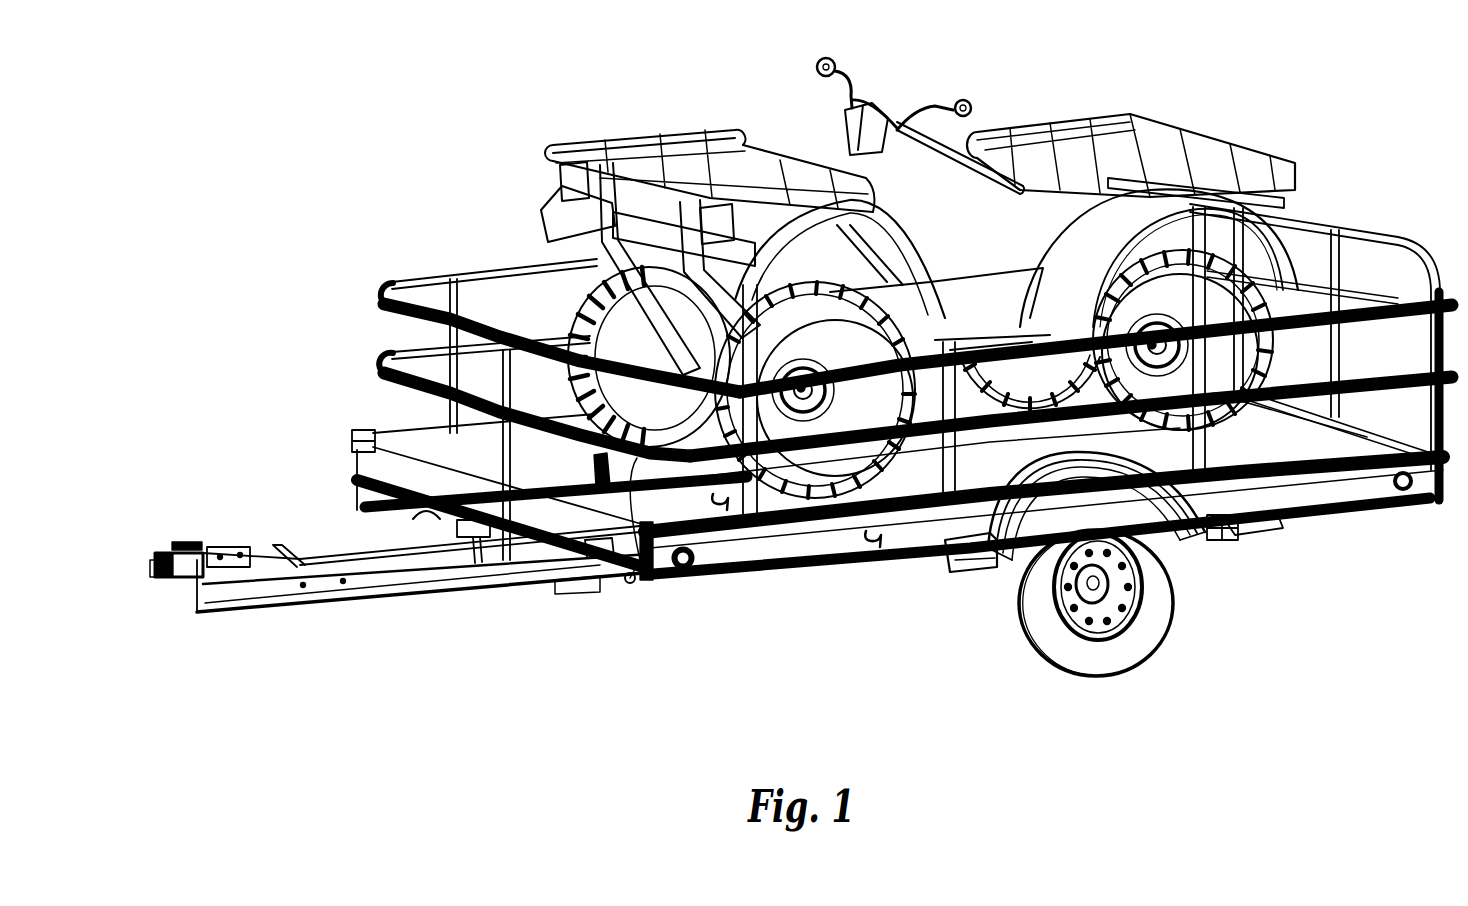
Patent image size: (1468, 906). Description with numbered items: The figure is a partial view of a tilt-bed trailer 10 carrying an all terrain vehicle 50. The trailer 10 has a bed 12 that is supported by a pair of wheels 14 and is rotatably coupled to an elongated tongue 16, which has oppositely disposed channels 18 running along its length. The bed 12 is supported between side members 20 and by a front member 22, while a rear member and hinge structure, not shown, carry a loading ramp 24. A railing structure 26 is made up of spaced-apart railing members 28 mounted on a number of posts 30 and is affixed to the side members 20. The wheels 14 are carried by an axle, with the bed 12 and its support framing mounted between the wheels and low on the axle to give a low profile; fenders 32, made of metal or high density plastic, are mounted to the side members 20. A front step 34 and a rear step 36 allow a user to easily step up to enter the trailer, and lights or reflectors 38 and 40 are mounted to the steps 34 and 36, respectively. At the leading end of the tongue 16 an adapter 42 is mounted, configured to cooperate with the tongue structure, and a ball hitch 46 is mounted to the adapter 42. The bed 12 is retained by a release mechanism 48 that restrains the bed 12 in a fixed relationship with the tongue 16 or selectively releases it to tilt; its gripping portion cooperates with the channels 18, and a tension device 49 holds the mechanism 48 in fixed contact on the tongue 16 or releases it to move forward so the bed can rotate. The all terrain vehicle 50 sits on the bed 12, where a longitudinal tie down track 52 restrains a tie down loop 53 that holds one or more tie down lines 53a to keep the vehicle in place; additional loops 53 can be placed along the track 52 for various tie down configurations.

The trailer 10 is at (237, 440).
The bed 12 is at (717, 513).
The wheels 14 is at (1027, 655).
The tongue 16 is at (320, 607).
The channels 18 is at (413, 595).
The side members 20 is at (385, 432).
The front member 22 is at (573, 583).
The loading ramp 24 is at (1350, 228).
The railing structure 26 is at (362, 290).
The railing members 28 is at (1395, 255).
The posts 30 is at (738, 540).
The fenders 32 is at (992, 570).
The front step 34 is at (953, 550).
The rear step 36 is at (1223, 540).
The light or reflector 38 is at (970, 575).
The light or reflector 40 is at (1240, 532).
The adapter 42 is at (270, 545).
The ball hitch 46 is at (160, 553).
The release mechanism 48 is at (455, 540).
The tension device 49 is at (413, 513).
The all terrain vehicle 50 is at (580, 140).
The tie down track 52 is at (597, 547).
The tie down loop 53 is at (592, 458).
The tie down lines 53a is at (628, 583).